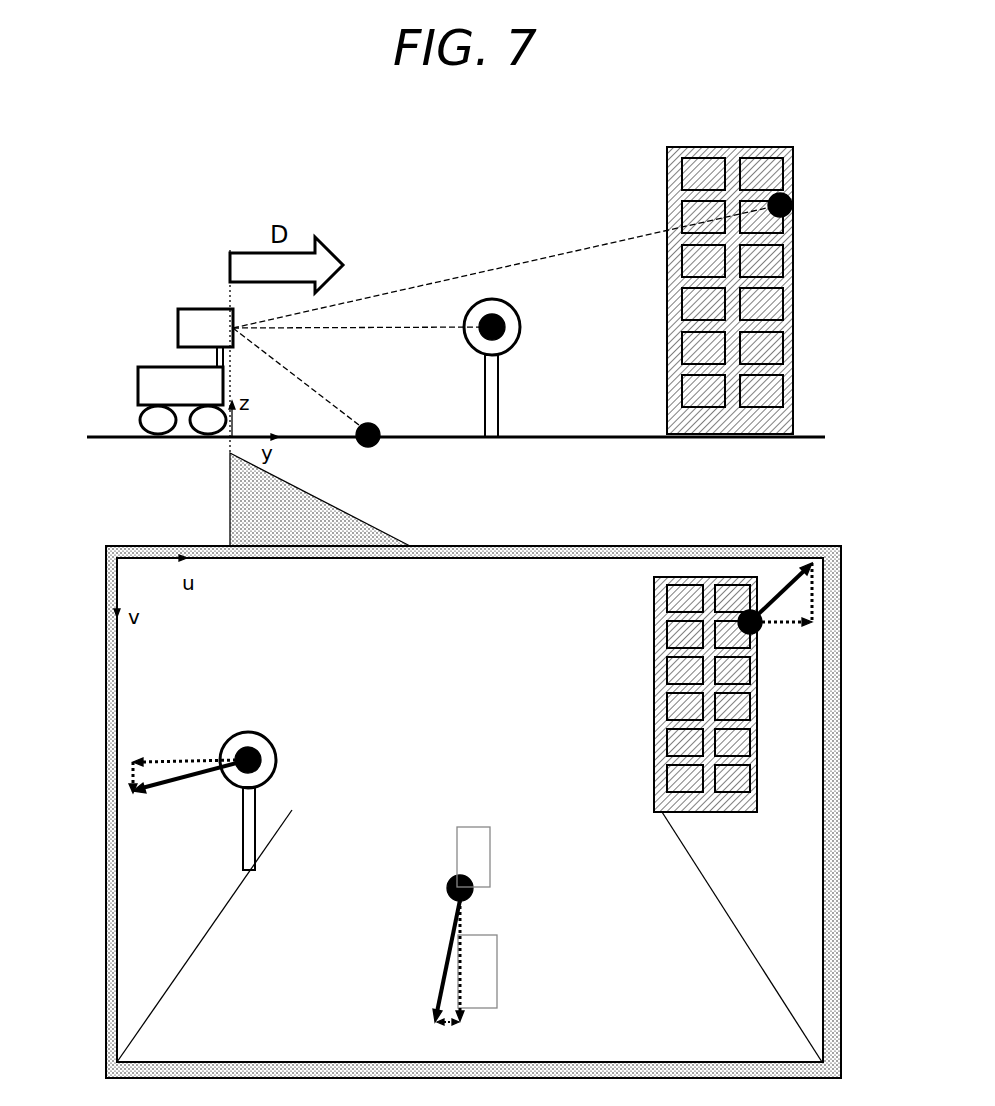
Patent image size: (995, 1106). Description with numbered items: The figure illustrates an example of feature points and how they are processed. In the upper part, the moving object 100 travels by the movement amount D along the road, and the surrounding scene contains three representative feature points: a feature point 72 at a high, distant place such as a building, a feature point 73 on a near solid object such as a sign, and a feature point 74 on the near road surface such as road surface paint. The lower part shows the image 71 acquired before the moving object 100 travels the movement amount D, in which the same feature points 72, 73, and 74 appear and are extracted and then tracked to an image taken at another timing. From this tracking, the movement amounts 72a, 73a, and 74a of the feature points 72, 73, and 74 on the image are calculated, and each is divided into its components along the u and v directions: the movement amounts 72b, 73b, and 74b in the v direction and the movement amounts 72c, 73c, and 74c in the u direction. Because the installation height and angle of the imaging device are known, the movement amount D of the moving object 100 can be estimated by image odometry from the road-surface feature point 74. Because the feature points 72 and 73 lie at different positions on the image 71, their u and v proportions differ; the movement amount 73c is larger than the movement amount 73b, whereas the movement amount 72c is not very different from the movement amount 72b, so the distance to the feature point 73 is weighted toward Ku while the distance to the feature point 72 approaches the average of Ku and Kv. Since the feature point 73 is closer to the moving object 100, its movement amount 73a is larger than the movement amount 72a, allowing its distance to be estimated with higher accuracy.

The moving object 100 is at (152, 367).
The image 71 is at (143, 958).
The feature point 72 is at (749, 290).
The movement amount 72a is at (787, 590).
The movement amount 72b is at (818, 592).
The movement amount 72c is at (780, 632).
The feature point 73 is at (512, 368).
The movement amount 73a is at (182, 790).
The movement amount 73b is at (130, 775).
The movement amount 73c is at (180, 755).
The feature point 74 is at (382, 423).
The movement amount 74a is at (445, 945).
The movement amount 74b is at (470, 915).
The movement amount 74c is at (465, 1030).